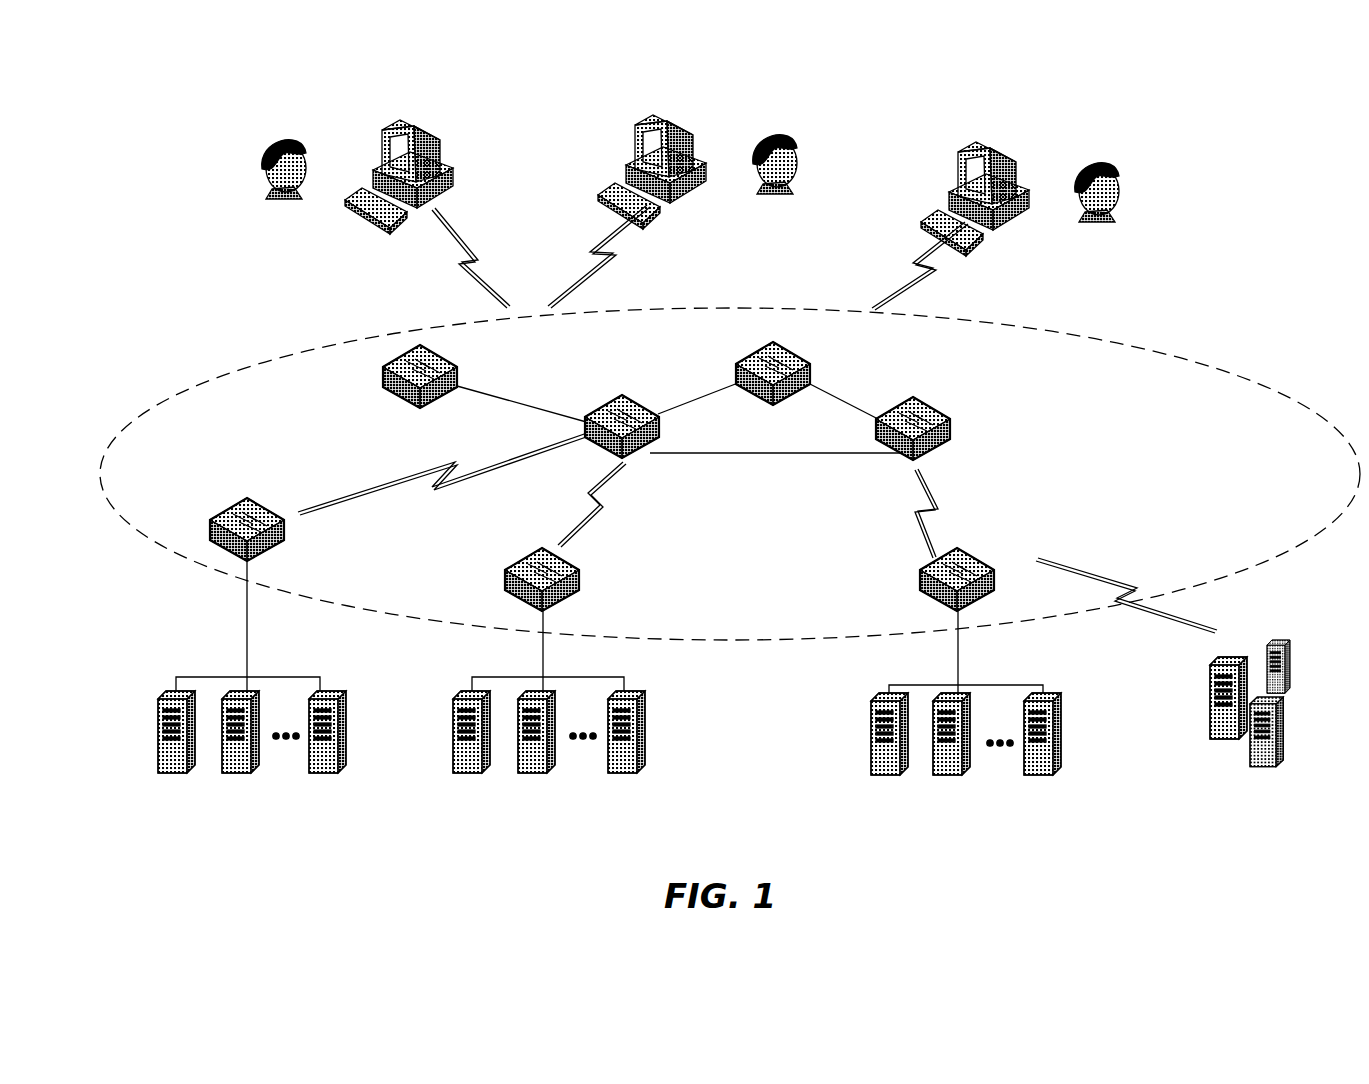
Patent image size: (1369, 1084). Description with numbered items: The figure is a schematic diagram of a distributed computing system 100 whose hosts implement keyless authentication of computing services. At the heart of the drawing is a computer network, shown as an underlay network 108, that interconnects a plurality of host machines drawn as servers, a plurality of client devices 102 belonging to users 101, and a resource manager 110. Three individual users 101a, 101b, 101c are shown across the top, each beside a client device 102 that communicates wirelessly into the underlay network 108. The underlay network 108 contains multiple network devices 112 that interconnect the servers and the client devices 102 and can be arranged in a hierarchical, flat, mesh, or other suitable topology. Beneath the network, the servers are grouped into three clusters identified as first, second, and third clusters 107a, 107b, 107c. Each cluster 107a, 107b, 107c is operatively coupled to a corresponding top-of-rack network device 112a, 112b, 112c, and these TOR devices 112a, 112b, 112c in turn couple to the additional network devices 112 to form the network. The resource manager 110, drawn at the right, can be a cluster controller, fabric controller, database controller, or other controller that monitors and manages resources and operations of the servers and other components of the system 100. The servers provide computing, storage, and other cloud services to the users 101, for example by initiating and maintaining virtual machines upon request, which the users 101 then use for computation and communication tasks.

The distributed computing system 100 is at (1240, 187).
The users 101 is at (116, 128).
The user 101a is at (1132, 170).
The user 101b is at (808, 132).
The user 101c is at (242, 128).
The client devices 102 is at (432, 128).
The first cluster 107a is at (118, 643).
The second cluster 107b is at (456, 663).
The third cluster 107c is at (1012, 654).
The underlay network 108 is at (730, 474).
The resource manager 110 is at (1290, 648).
The network devices 112 is at (400, 358).
The top-of-rack network device 112a is at (232, 513).
The top-of-rack network device 112b is at (530, 555).
The top-of-rack network device 112c is at (980, 555).